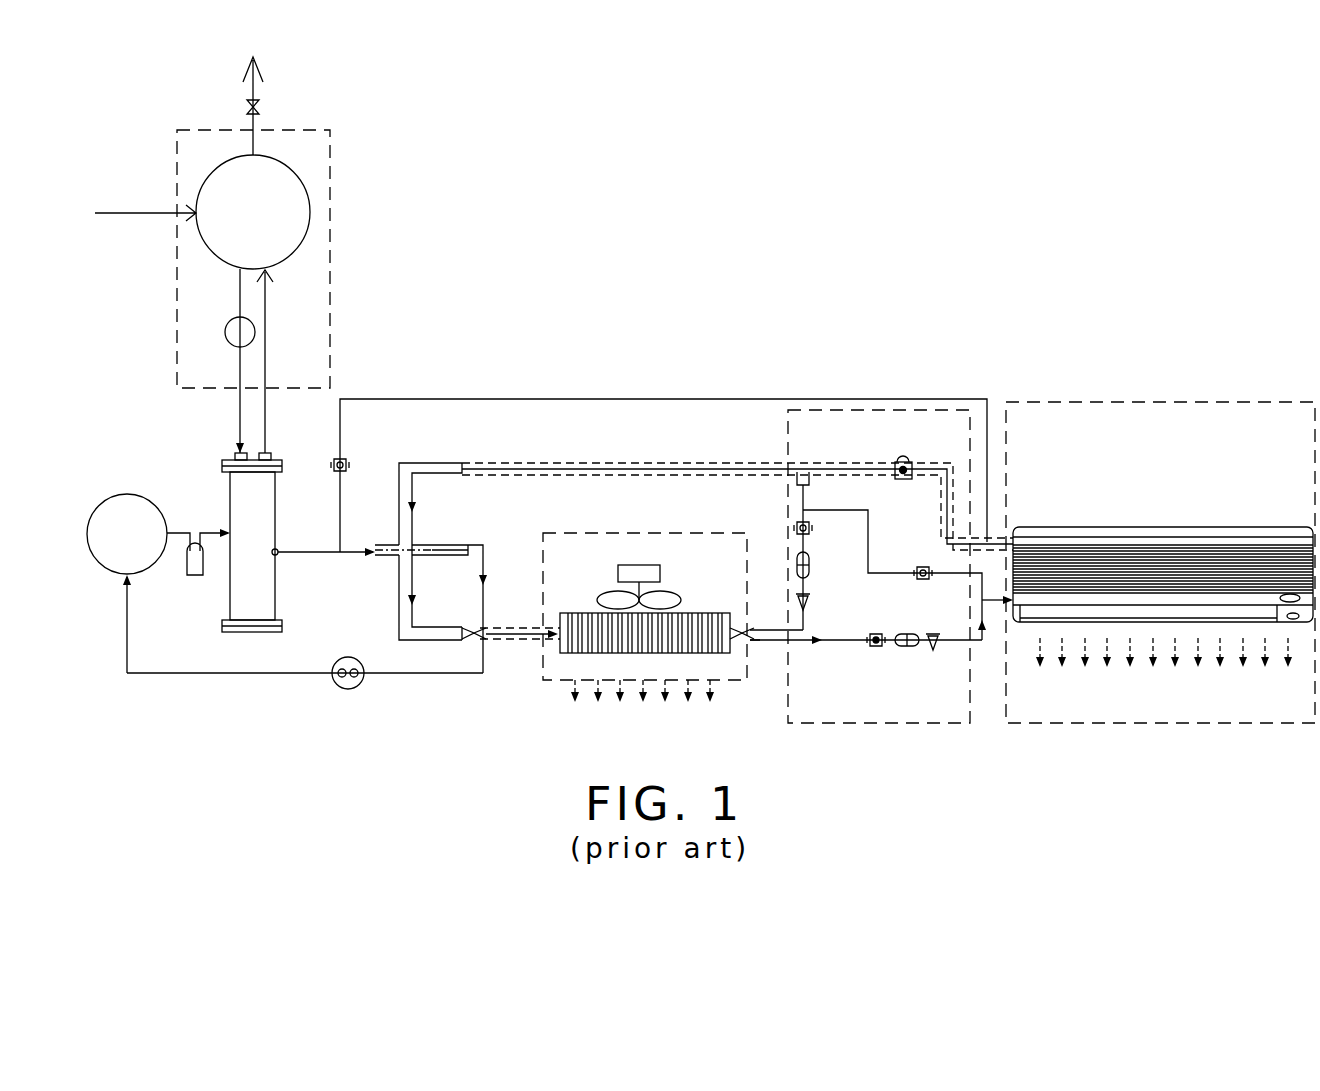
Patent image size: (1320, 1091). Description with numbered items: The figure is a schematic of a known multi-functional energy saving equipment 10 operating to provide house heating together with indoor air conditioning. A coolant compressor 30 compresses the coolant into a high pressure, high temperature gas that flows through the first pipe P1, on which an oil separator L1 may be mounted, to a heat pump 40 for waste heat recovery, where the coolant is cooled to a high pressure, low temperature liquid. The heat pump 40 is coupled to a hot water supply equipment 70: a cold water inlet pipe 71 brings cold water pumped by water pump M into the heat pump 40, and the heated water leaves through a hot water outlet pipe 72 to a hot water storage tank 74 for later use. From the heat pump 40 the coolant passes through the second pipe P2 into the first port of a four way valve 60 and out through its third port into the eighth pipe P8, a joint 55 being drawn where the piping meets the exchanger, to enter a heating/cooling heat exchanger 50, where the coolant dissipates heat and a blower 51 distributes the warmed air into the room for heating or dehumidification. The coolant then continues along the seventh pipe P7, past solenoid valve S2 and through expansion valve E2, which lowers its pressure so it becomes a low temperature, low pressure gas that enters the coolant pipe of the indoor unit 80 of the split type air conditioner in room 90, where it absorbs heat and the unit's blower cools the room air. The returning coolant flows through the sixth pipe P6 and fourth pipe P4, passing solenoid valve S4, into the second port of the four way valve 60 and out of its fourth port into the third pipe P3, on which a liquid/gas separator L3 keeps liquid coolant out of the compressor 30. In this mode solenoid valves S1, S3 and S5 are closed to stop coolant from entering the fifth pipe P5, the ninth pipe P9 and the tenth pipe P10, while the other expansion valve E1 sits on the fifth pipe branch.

The multi-functional energy saving equipment 10 is at (752, 132).
The coolant compressor 30 is at (87, 531).
The heat pump 40 is at (278, 513).
The heating/cooling heat exchanger 50 is at (560, 616).
The blower 51 is at (660, 570).
The pipe joint 55 is at (756, 634).
The four way valve 60 is at (418, 462).
The hot water supply equipment 70 is at (297, 128).
The cold water inlet pipe 71 is at (238, 367).
The hot water outlet pipe 72 is at (268, 367).
The hot water storage tank 74 is at (312, 212).
The indoor unit of split type air conditioner 80 is at (1154, 526).
The room 90 is at (1306, 437).
The first pipe P1 is at (176, 530).
The second pipe P2 is at (319, 560).
The third pipe P3 is at (163, 670).
The fourth pipe P4 is at (623, 462).
The fifth pipe P5 is at (800, 518).
The sixth pipe P6 is at (846, 466).
The seventh pipe P7 is at (836, 647).
The eighth pipe P8 is at (513, 652).
The ninth pipe P9 is at (562, 397).
The tenth pipe P10 is at (871, 576).
The solenoid valve S1 is at (821, 528).
The solenoid valve S2 is at (878, 655).
The solenoid valve S3 is at (357, 465).
The solenoid valve S4 is at (907, 455).
The solenoid valve S5 is at (927, 588).
The expansion valve E1 is at (822, 582).
The expansion valve E2 is at (924, 655).
The oil separator L1 is at (200, 571).
The liquid/gas separator L3 is at (350, 688).